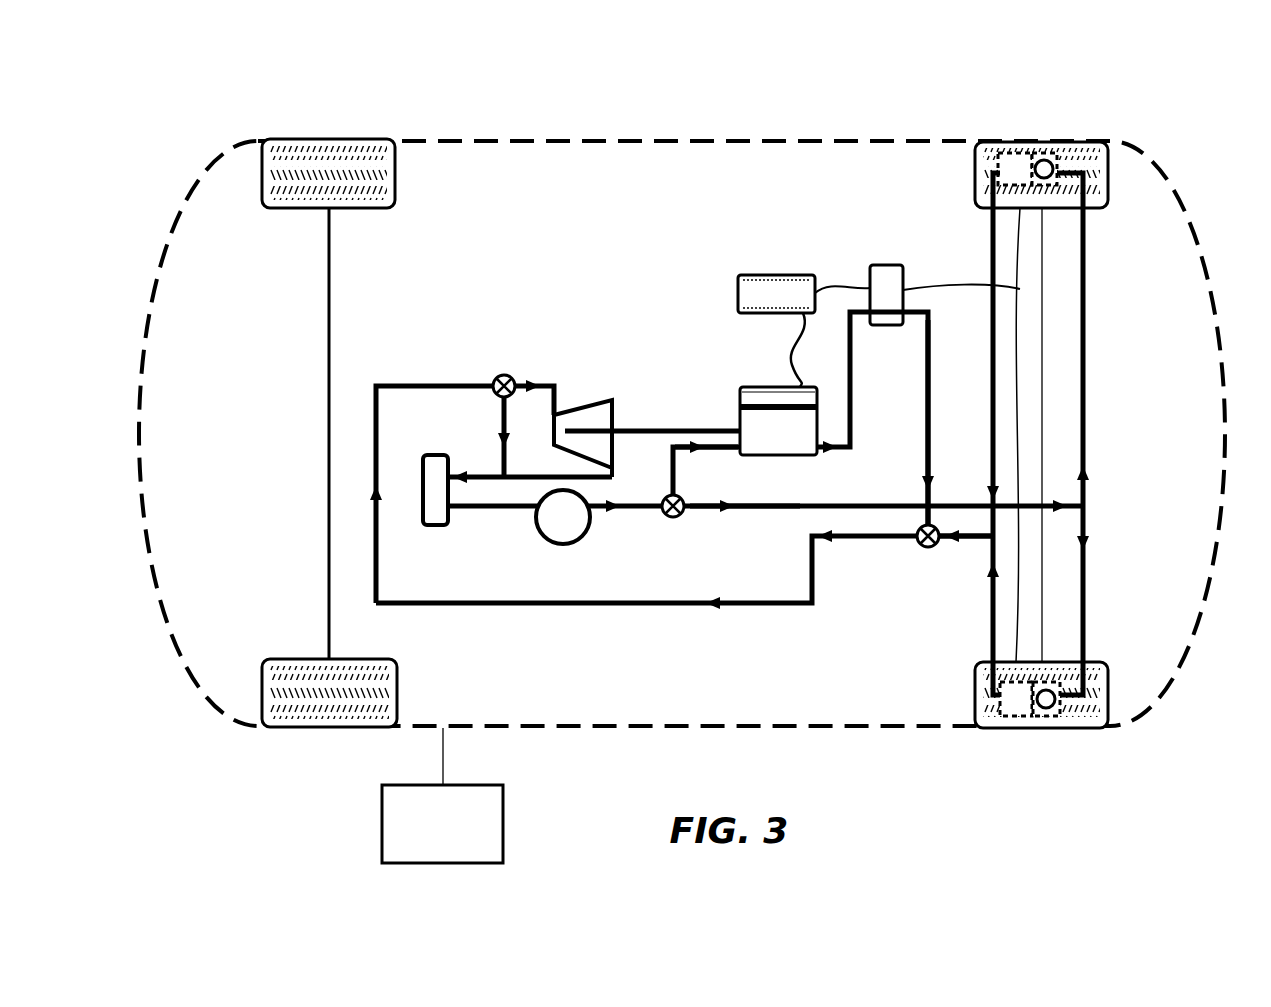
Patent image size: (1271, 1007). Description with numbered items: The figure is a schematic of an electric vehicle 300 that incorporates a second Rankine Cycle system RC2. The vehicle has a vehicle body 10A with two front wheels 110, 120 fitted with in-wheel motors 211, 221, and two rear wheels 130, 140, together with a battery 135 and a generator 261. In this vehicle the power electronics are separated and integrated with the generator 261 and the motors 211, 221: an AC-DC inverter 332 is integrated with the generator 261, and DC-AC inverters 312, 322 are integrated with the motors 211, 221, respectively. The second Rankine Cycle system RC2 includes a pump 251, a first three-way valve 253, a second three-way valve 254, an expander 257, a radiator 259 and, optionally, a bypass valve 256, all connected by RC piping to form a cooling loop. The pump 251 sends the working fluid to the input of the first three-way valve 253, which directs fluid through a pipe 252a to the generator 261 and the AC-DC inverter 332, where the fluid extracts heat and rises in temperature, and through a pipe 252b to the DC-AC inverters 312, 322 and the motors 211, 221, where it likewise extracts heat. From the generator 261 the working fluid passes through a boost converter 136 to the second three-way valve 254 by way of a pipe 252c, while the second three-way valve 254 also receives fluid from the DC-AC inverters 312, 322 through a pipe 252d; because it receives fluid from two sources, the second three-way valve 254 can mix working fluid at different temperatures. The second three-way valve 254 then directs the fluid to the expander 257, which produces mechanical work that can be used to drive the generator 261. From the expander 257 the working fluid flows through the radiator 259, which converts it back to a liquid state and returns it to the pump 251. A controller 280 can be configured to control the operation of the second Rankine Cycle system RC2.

The electric vehicle 300 is at (1175, 93).
The vehicle body 10A is at (609, 132).
The rear wheel 130 is at (262, 152).
The rear wheel 140 is at (262, 700).
The front wheel 110 is at (1043, 136).
The front wheel 120 is at (1029, 742).
The DC-AC inverter 312 is at (1012, 170).
The in-wheel motor 211 is at (1043, 160).
The DC-AC inverter 322 is at (1012, 700).
The in-wheel motor 221 is at (1045, 700).
The battery 135 is at (804, 331).
The boost converter 136 is at (945, 295).
The second Rankine Cycle system RC2 is at (726, 457).
The bypass valve 256 is at (507, 375).
The expander 257 is at (611, 400).
The AC-DC inverter 332 is at (745, 392).
The radiator 259 is at (423, 470).
The pump 251 is at (563, 517).
The first three-way valve 253 is at (665, 518).
The second three-way valve 254 is at (920, 547).
The generator 261 is at (778, 421).
The pipe 252a is at (688, 452).
The pipe 252b is at (746, 512).
The pipe 252c is at (926, 483).
The pipe 252d is at (970, 545).
The controller 280 is at (442, 795).